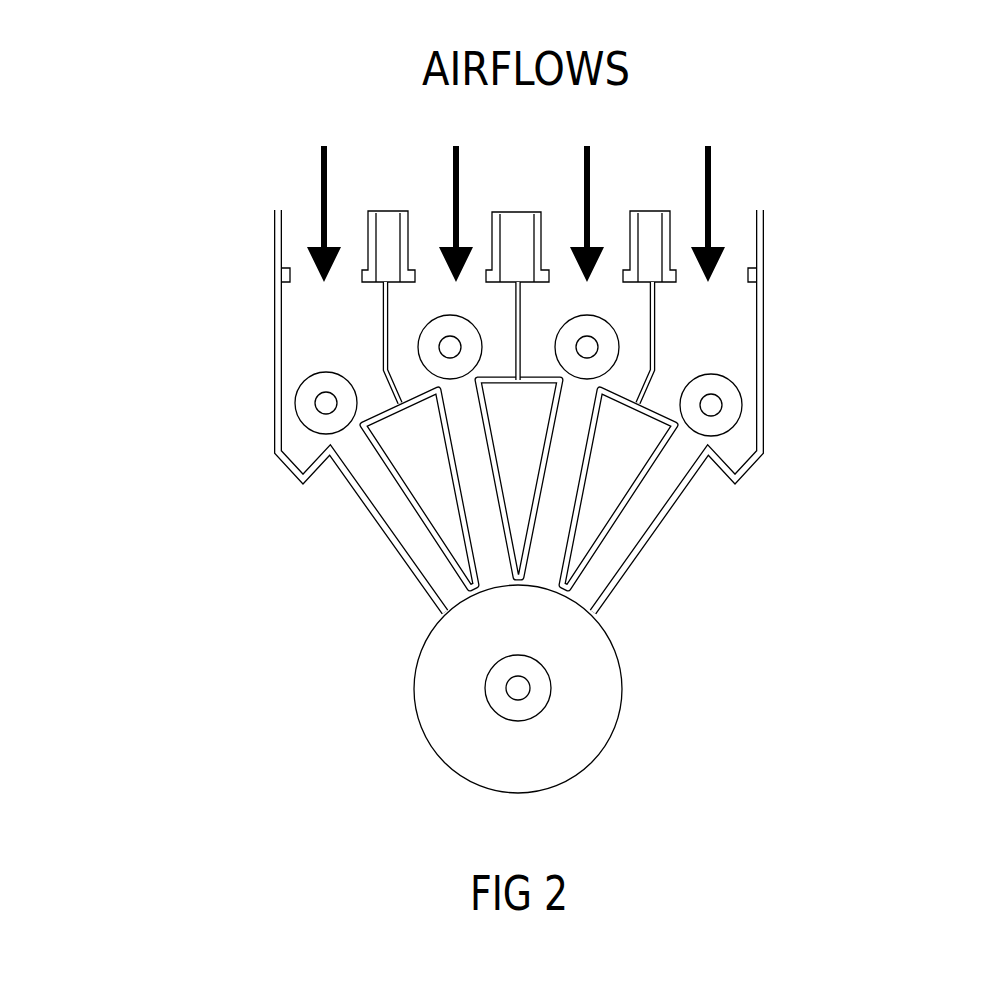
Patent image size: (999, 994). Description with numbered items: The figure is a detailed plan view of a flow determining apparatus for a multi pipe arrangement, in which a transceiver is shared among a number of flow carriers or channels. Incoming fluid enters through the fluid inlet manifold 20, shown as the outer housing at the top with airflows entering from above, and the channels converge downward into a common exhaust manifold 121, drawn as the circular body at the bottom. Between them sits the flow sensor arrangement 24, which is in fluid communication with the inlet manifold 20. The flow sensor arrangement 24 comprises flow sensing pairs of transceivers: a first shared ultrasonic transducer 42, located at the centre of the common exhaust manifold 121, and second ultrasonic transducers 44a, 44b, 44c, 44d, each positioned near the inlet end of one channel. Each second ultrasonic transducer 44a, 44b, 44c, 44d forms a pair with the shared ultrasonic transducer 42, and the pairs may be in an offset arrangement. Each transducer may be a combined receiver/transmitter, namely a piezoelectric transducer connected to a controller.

The fluid inlet manifold 20 is at (272, 303).
The flow sensor arrangement 24 is at (307, 657).
The first shared ultrasonic transducer 42 is at (549, 688).
The second ultrasonic transducer 44a is at (300, 402).
The second ultrasonic transducer 44b is at (437, 347).
The second ultrasonic transducer 44c is at (608, 348).
The second ultrasonic transducer 44d is at (740, 403).
The common exhaust manifold 121 is at (618, 662).